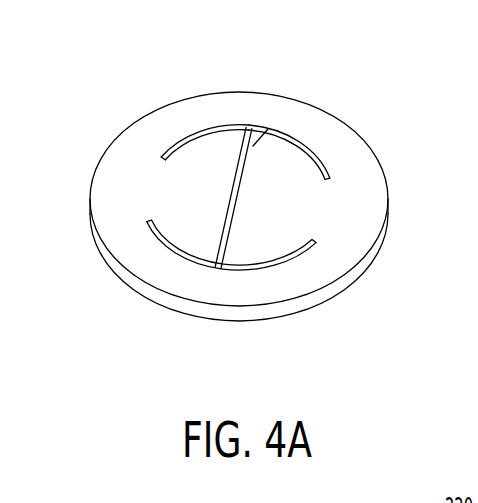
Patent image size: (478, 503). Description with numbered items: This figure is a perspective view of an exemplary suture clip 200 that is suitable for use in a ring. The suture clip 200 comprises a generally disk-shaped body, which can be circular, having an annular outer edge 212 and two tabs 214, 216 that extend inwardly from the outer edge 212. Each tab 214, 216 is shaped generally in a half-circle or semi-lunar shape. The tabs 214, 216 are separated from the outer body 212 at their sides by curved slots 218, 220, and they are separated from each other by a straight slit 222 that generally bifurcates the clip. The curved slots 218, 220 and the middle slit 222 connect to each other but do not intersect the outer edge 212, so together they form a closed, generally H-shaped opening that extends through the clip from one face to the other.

The suture clip 200 is at (147, 293).
The annular outer edge 212 is at (208, 105).
The tab 214 is at (187, 200).
The tab 216 is at (285, 208).
The curved slot 218 is at (240, 266).
The curved slot 220 is at (182, 143).
The straight slit 222 is at (278, 131).